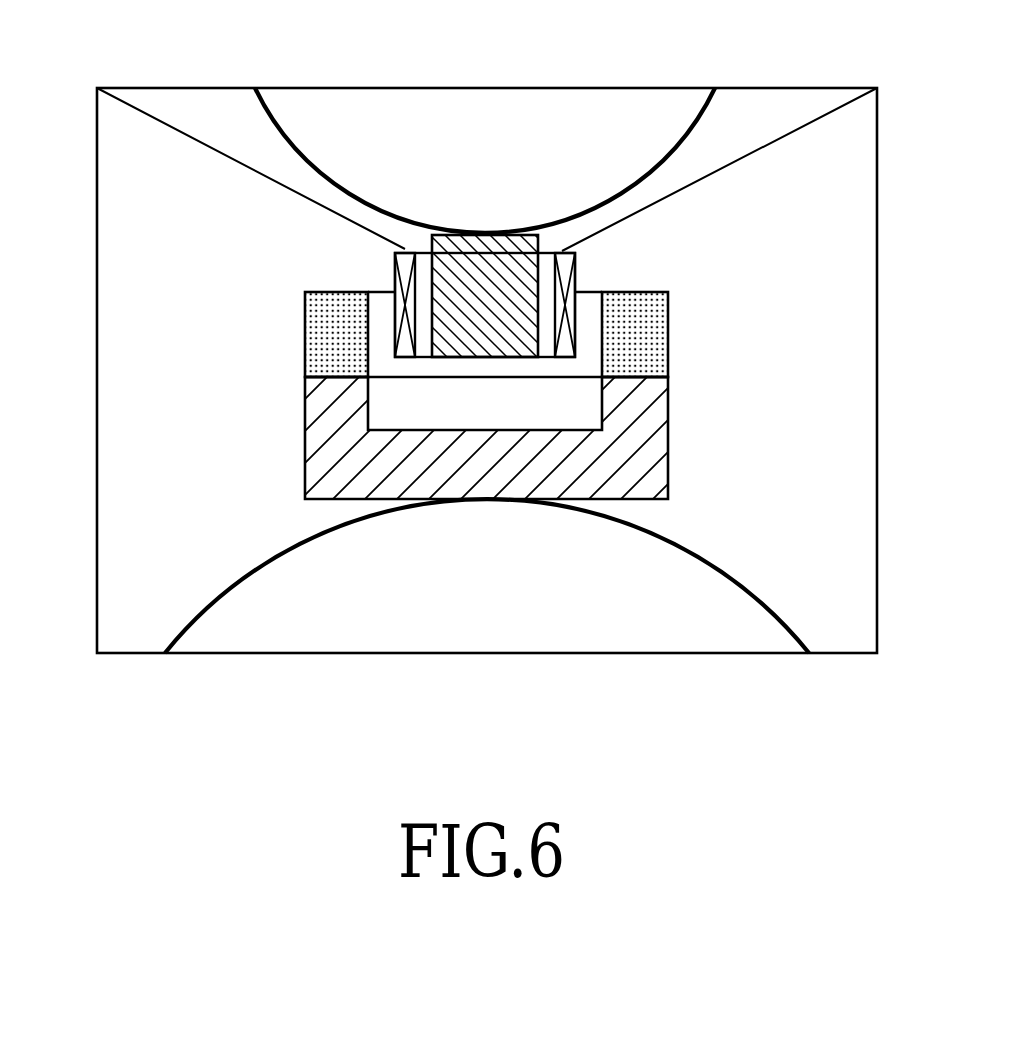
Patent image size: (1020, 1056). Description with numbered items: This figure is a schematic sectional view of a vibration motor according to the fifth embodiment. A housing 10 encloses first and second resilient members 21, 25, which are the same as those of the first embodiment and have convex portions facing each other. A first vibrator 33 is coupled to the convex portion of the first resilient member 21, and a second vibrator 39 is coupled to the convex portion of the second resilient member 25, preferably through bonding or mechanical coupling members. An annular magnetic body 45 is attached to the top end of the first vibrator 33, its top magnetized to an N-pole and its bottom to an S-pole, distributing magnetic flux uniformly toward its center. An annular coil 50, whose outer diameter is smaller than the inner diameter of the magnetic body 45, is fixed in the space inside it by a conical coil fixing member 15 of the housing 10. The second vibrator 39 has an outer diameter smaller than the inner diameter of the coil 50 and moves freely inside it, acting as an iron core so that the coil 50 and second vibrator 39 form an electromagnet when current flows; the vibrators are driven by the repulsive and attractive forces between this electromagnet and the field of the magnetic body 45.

The housing 10 is at (96, 371).
The coil fixing member 15 is at (795, 130).
The first resilient member 21 is at (723, 571).
The second resilient member 25 is at (290, 137).
The first vibrator 33 is at (305, 447).
The second vibrator 39 is at (480, 250).
The magnetic body 45 is at (668, 337).
The coil 50 is at (580, 268).